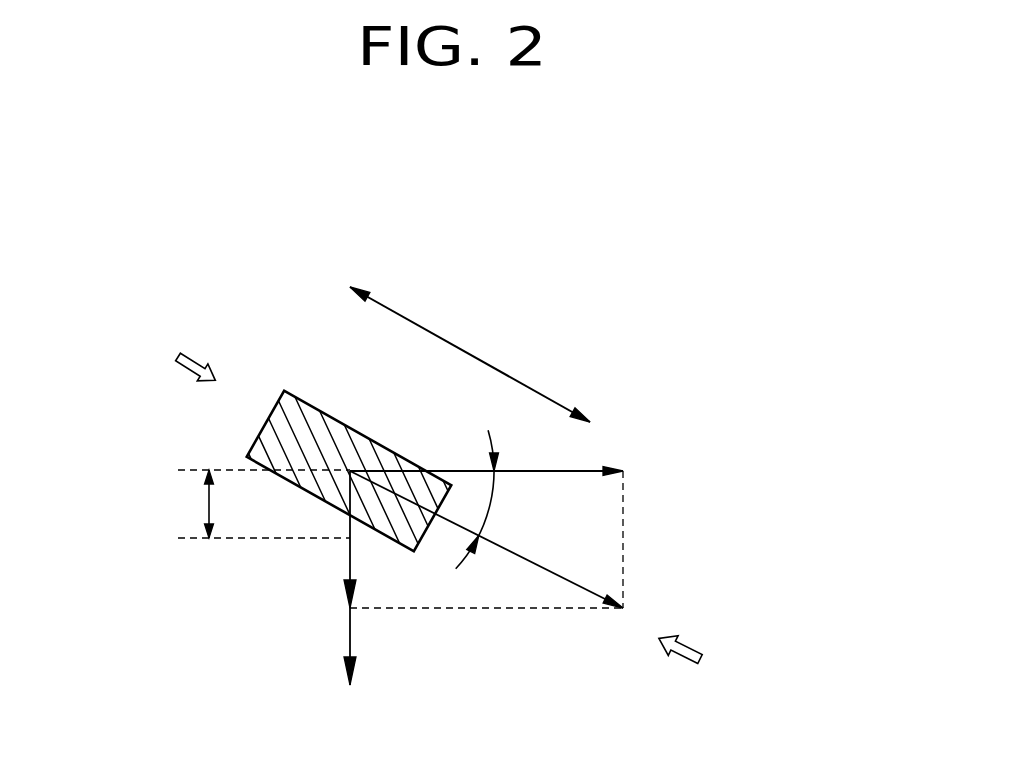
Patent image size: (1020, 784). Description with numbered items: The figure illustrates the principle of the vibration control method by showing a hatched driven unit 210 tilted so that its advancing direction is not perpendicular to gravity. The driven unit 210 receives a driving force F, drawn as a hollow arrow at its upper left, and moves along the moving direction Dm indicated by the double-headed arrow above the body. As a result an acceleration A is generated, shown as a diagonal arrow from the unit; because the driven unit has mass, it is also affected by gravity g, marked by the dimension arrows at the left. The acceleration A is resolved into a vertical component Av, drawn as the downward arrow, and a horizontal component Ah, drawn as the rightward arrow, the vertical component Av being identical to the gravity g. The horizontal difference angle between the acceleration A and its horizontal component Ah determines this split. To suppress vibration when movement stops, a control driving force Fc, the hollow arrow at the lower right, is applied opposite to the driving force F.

The moving body 210 is at (303, 430).
The moving direction Dm is at (488, 342).
The gravity g is at (192, 504).
The horizontal component Ah is at (486, 459).
The acceleration A is at (486, 539).
The vertical component Av is at (326, 578).
The driving force F is at (181, 359).
The control driving force Fc is at (700, 660).